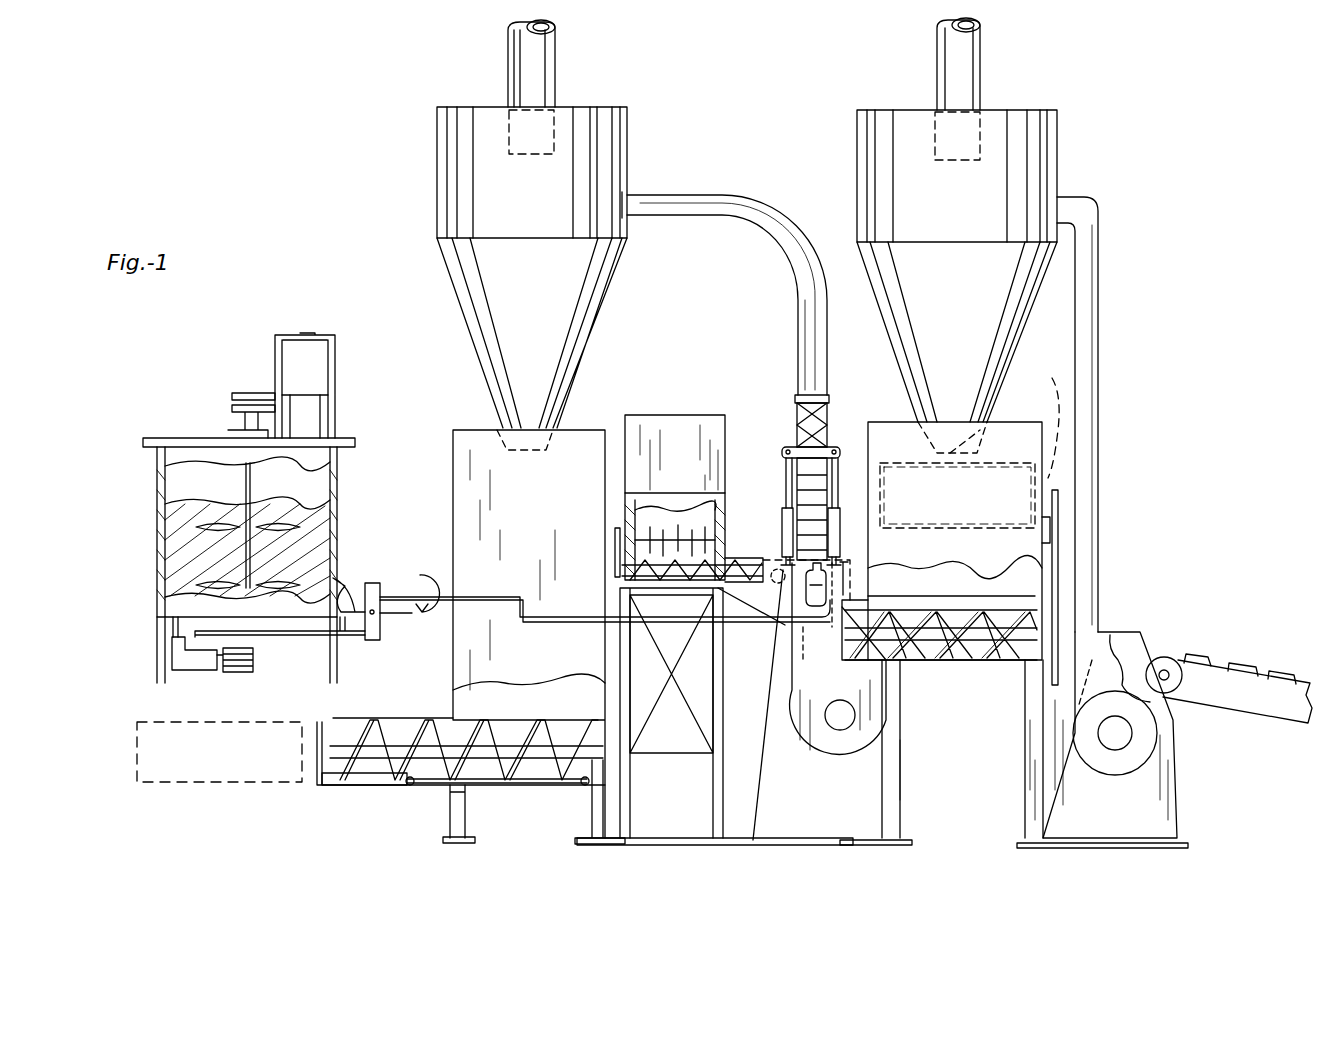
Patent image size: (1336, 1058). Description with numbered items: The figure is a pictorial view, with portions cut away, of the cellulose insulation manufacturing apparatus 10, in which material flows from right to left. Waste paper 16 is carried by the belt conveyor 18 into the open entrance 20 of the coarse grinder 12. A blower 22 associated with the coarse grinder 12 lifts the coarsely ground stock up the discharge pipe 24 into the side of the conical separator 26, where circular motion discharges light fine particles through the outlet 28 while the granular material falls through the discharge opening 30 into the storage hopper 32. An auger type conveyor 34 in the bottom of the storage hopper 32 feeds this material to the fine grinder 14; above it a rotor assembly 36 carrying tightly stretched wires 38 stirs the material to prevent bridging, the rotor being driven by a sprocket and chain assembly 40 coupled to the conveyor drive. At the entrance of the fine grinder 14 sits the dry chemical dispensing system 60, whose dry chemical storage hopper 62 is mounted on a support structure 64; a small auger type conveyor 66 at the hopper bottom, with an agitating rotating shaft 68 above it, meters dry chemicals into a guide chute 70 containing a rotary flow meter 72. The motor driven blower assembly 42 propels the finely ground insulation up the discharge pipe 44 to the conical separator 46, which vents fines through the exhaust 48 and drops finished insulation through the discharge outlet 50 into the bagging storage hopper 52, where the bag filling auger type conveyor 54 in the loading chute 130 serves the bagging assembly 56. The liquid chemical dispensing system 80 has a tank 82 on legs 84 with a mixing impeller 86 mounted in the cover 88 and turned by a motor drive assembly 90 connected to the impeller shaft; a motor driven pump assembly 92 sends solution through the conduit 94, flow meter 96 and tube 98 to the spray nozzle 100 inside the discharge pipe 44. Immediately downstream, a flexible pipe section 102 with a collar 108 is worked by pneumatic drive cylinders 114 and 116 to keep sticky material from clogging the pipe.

The insulation manufacturing apparatus 10 is at (1173, 210).
The coarse grinder 12 is at (1168, 742).
The fine grinder 14 is at (790, 760).
The waste paper 16 is at (1212, 657).
The belt conveyor 18 is at (1275, 724).
The open entrance 20 is at (1130, 657).
The blower 22 is at (1078, 713).
The discharge pipe 24 is at (1088, 412).
The conical separator 26 is at (1030, 167).
The outlet 28 is at (965, 66).
The discharge opening 30 is at (997, 425).
The storage hopper 32 is at (897, 436).
The auger type conveyor 34 is at (957, 662).
The rotor assembly 36 is at (1042, 418).
The wires 38 is at (944, 470).
The sprocket and chain assembly 40 is at (1055, 548).
The motor driven blower assembly 42 is at (792, 703).
The discharge pipe 44 is at (765, 222).
The conical separator 46 is at (600, 165).
The exhaust 48 is at (540, 62).
The discharge outlet 50 is at (497, 432).
The bagging storage hopper 52 is at (568, 440).
The bag filling auger type conveyor 54 is at (500, 762).
The bagging assembly 56 is at (355, 780).
The dry chemical storage and dispensing system 60 is at (731, 400).
The dry chemical storage hopper 62 is at (718, 443).
The support structure 64 is at (627, 795).
The auger type conveyor 66 is at (700, 582).
The rotating shaft 68 is at (715, 518).
The guide chute 70 is at (777, 622).
The rotary flow meter 72 is at (772, 556).
The liquid fire retardant chemical dispensing system 80 is at (158, 328).
The tank 82 is at (332, 452).
The legs 84 is at (157, 657).
The mixing impeller 86 is at (165, 545).
The cover 88 is at (165, 445).
The motor 90 is at (282, 338).
The motor driven pump assembly 92 is at (195, 670).
The conduit 94 is at (283, 636).
The flow meter 96 is at (375, 583).
The tube 98 is at (577, 622).
The spray nozzle 100 is at (860, 582).
The flexible pipe section 102 is at (781, 466).
The collar 108 is at (828, 450).
The pneumatic drive cylinder 114 is at (836, 520).
The pneumatic drive cylinder 116 is at (784, 524).
The loading chute 130 is at (422, 716).